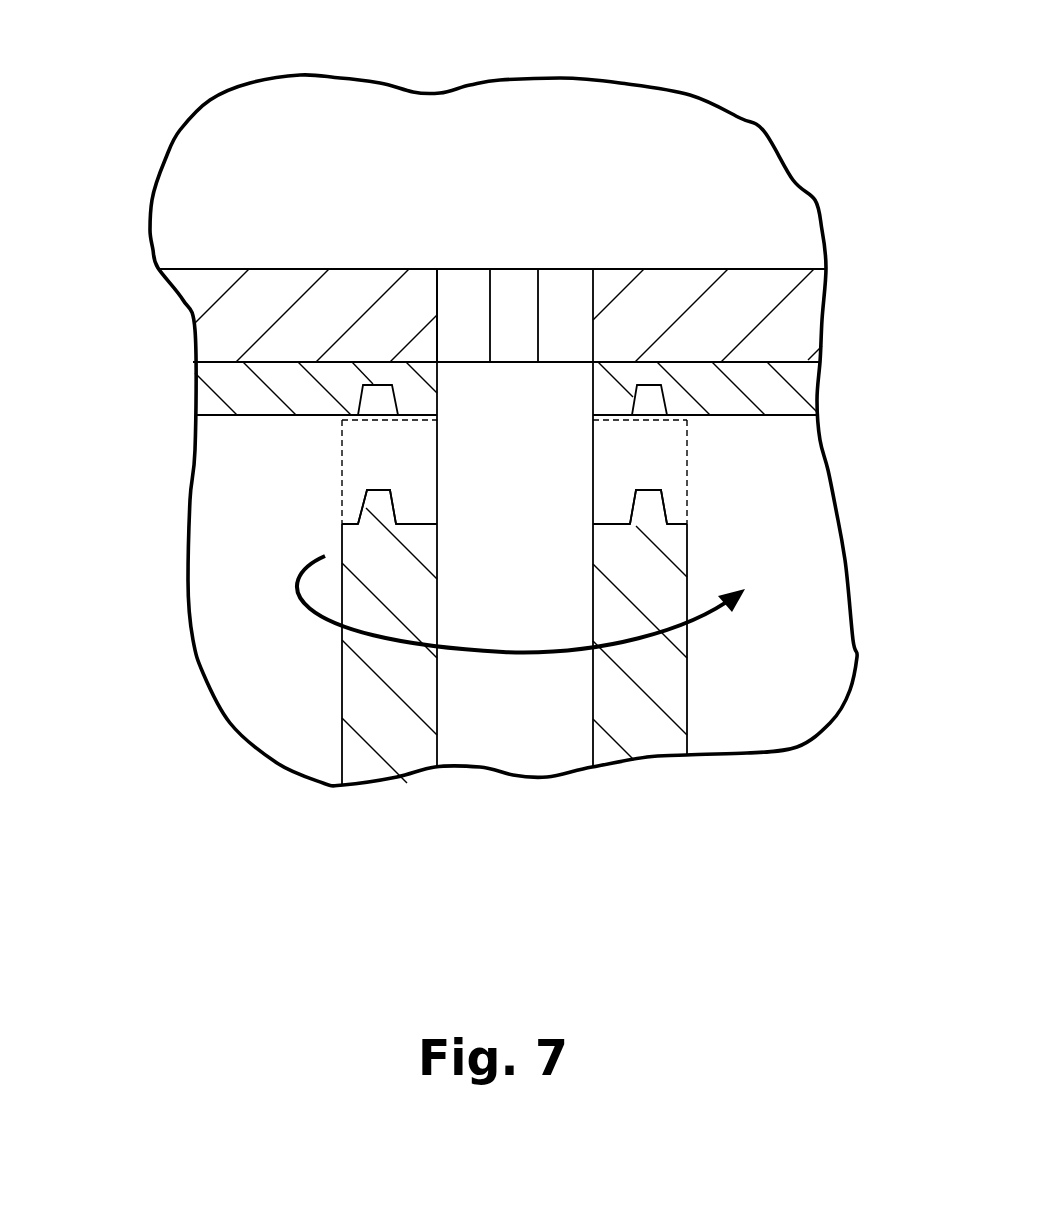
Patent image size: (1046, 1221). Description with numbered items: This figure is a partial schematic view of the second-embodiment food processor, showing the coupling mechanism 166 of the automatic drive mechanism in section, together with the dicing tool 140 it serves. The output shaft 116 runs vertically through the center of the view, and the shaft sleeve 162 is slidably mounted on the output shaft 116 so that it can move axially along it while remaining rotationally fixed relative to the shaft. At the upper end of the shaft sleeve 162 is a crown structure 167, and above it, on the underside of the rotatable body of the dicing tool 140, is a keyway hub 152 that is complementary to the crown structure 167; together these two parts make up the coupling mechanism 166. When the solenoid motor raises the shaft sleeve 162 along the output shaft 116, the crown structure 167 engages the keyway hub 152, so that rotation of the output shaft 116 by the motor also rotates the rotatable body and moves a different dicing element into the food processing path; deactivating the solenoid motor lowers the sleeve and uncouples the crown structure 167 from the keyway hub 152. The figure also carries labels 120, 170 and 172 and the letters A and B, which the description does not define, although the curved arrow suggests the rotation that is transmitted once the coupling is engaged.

The plate 120 is at (188, 264).
The dicing tool 140 is at (228, 421).
The keyway hub 152 is at (667, 362).
The shaft sleeve 162 is at (342, 713).
The output shaft 116 is at (577, 742).
The coupling mechanism 166 is at (356, 486).
The crown structure 167 is at (663, 500).
The bolt 170 is at (552, 287).
The bore 172 is at (438, 300).
The dimension A is at (680, 540).
The dimension B is at (677, 452).